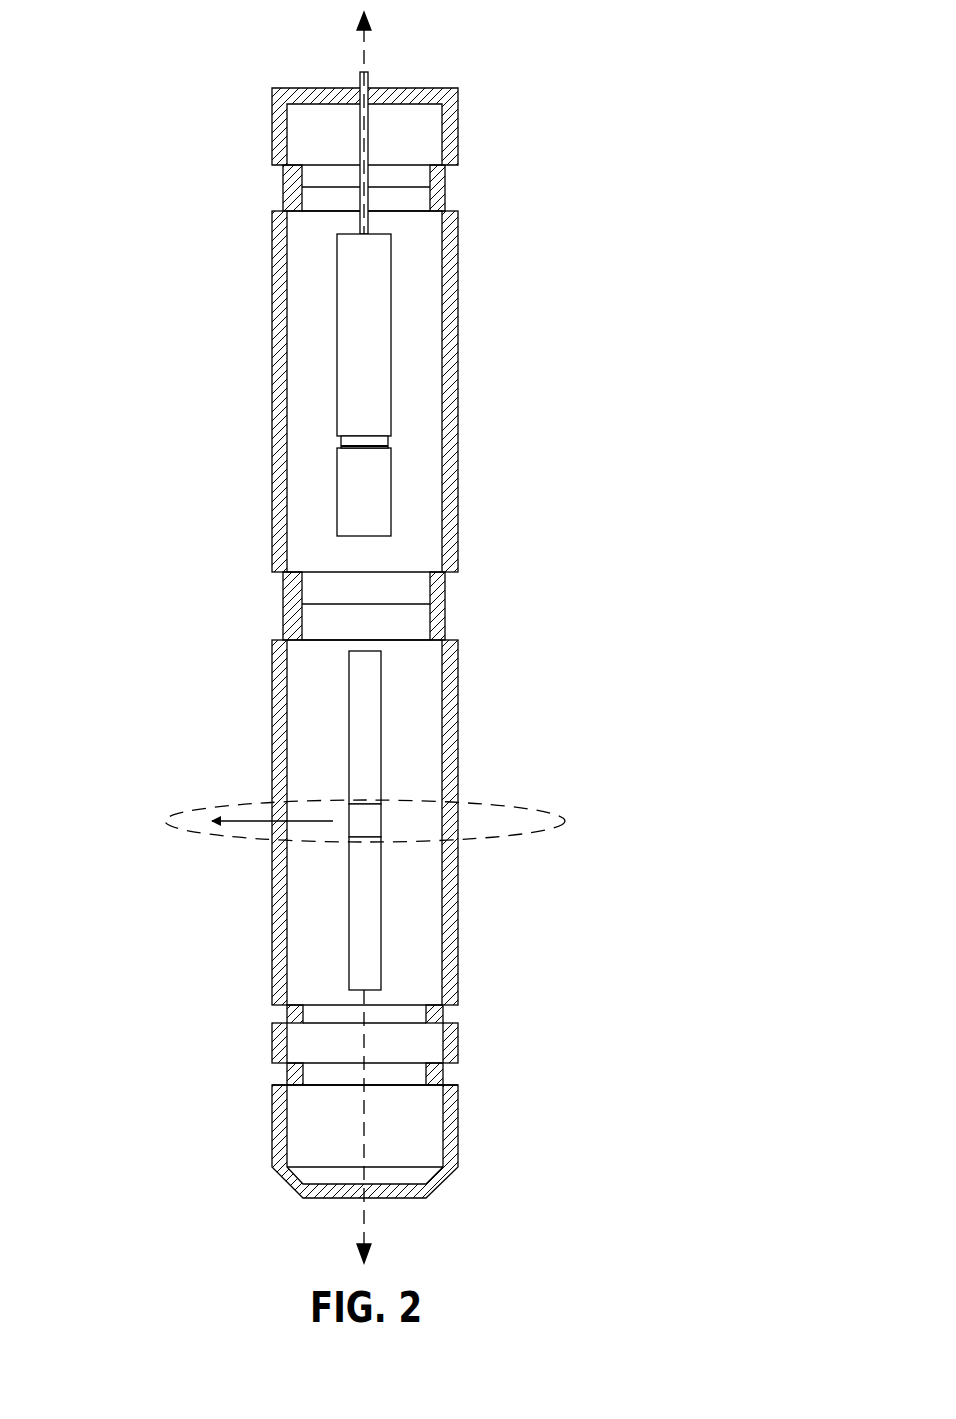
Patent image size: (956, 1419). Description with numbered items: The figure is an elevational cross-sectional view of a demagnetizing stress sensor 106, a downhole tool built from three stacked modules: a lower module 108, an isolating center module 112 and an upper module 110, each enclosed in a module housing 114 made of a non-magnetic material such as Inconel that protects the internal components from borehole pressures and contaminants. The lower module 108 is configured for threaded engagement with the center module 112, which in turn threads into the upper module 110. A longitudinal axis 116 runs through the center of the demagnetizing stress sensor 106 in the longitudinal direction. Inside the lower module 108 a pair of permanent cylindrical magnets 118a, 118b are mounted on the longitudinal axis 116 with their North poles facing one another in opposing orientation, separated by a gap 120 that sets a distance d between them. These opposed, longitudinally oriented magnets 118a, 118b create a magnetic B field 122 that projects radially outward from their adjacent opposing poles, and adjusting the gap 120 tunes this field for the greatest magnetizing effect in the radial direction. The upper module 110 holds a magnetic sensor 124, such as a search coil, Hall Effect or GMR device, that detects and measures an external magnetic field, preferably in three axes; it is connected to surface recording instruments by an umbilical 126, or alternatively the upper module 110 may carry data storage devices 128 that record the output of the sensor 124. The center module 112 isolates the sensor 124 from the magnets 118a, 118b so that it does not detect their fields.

The demagnetizing stress sensor 106 is at (375, 637).
The lower module 108 is at (455, 732).
The upper module 110 is at (447, 327).
The isolating center module 112 is at (440, 595).
The module housing 114 is at (436, 643).
The longitudinal axis 116 is at (366, 40).
The permanent cylindrical magnet 118a is at (381, 924).
The permanent cylindrical magnet 118b is at (381, 703).
The gap 120 is at (381, 818).
The magnetic B field 122 is at (552, 820).
The magnetic sensor 124 is at (391, 292).
The umbilical 126 is at (370, 118).
The data storage devices 128 is at (391, 452).